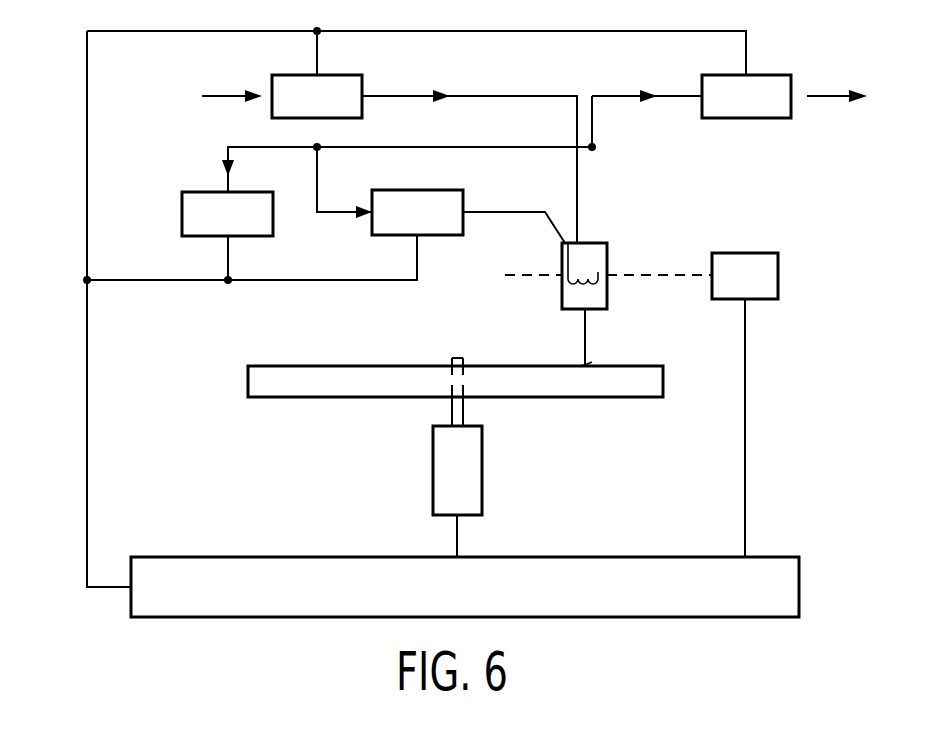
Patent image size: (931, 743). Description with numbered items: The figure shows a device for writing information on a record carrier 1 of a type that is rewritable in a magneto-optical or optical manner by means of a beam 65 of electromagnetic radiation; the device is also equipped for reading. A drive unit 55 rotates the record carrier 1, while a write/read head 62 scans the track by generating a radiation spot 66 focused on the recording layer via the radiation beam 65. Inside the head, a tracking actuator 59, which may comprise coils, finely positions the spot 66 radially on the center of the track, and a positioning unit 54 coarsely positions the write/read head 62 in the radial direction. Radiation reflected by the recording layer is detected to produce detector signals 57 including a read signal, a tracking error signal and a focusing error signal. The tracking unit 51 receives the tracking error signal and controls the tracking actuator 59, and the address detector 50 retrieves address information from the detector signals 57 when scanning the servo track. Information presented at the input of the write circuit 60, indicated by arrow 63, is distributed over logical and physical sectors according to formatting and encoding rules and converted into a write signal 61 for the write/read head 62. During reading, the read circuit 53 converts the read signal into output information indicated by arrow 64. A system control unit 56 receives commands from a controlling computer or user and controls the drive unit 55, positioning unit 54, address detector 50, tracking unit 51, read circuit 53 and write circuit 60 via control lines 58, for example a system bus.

The record carrier 1 is at (601, 398).
The address detector 50 is at (182, 212).
The tracking unit 51 is at (446, 236).
The read circuit 53 is at (748, 119).
The positioning unit 54 is at (771, 285).
The drive unit 55 is at (472, 487).
The system control unit 56 is at (680, 571).
The detector signals 57 is at (517, 160).
The control lines 58 is at (87, 143).
The tracking actuator 59 is at (563, 283).
The write circuit 60 is at (285, 74).
The write signal 61 is at (497, 94).
The write/read head 62 is at (597, 253).
The input information arrow 63 is at (213, 97).
The output information arrow 64 is at (826, 98).
The radiation beam 65 is at (583, 338).
The radiation spot 66 is at (586, 366).